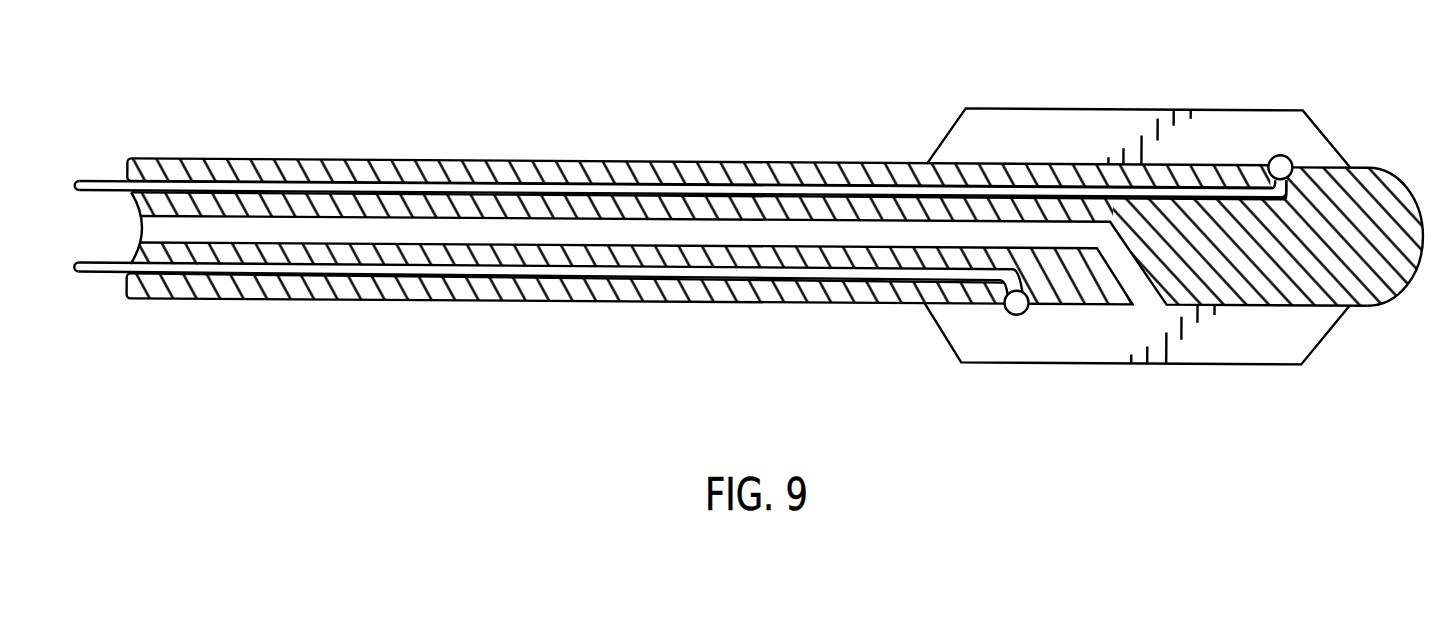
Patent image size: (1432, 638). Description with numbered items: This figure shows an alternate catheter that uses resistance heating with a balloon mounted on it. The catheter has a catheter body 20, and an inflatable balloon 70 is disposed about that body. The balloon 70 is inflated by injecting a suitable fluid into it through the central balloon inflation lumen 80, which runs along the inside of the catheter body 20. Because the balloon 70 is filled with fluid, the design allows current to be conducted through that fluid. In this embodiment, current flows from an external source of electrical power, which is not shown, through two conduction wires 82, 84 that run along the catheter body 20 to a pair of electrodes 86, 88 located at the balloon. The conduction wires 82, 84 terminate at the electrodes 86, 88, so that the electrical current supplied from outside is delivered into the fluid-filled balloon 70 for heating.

The catheter body 20 is at (345, 163).
The inflatable balloon 70 is at (940, 333).
The central balloon inflation lumen 80 is at (368, 228).
The conduction wire 82 is at (96, 280).
The conduction wire 84 is at (100, 186).
The electrode 86 is at (1021, 314).
The electrode 88 is at (1281, 153).